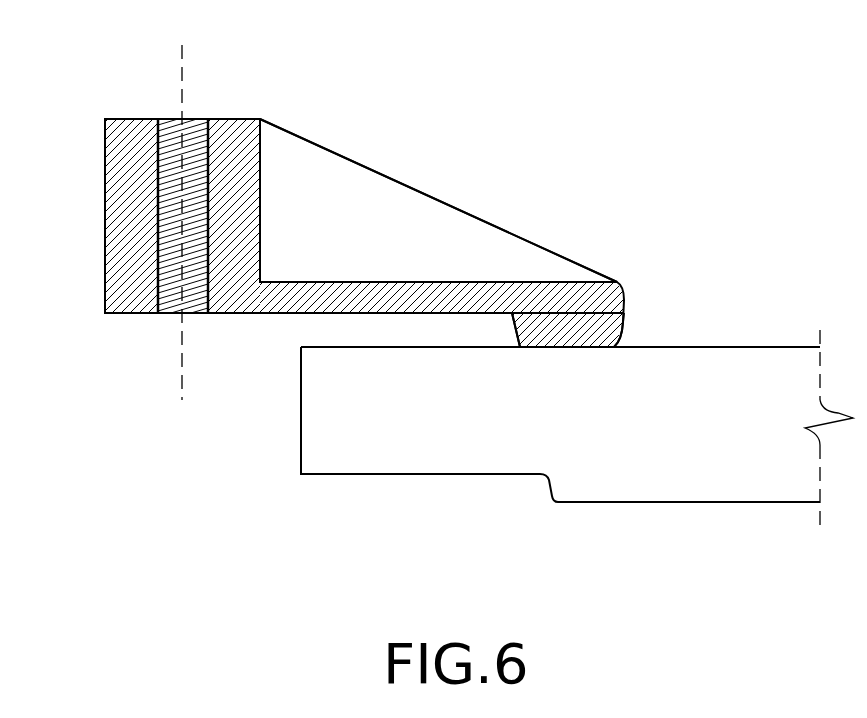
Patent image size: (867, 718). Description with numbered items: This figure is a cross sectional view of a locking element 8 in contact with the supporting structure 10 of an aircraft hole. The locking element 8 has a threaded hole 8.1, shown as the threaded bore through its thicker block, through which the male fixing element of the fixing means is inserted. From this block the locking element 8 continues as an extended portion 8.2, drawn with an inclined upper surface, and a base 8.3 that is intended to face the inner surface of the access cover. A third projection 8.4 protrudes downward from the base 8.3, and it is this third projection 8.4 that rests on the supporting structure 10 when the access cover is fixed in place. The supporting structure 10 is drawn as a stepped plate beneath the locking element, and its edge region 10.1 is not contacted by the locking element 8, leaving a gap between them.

The locking element 8 is at (270, 76).
The threaded hole 8.1 is at (170, 119).
The extended portion 8.2 is at (530, 282).
The base 8.3 is at (400, 313).
The third projection 8.4 is at (622, 335).
The supporting structure 10 is at (662, 488).
The edge region 10.1 is at (383, 442).